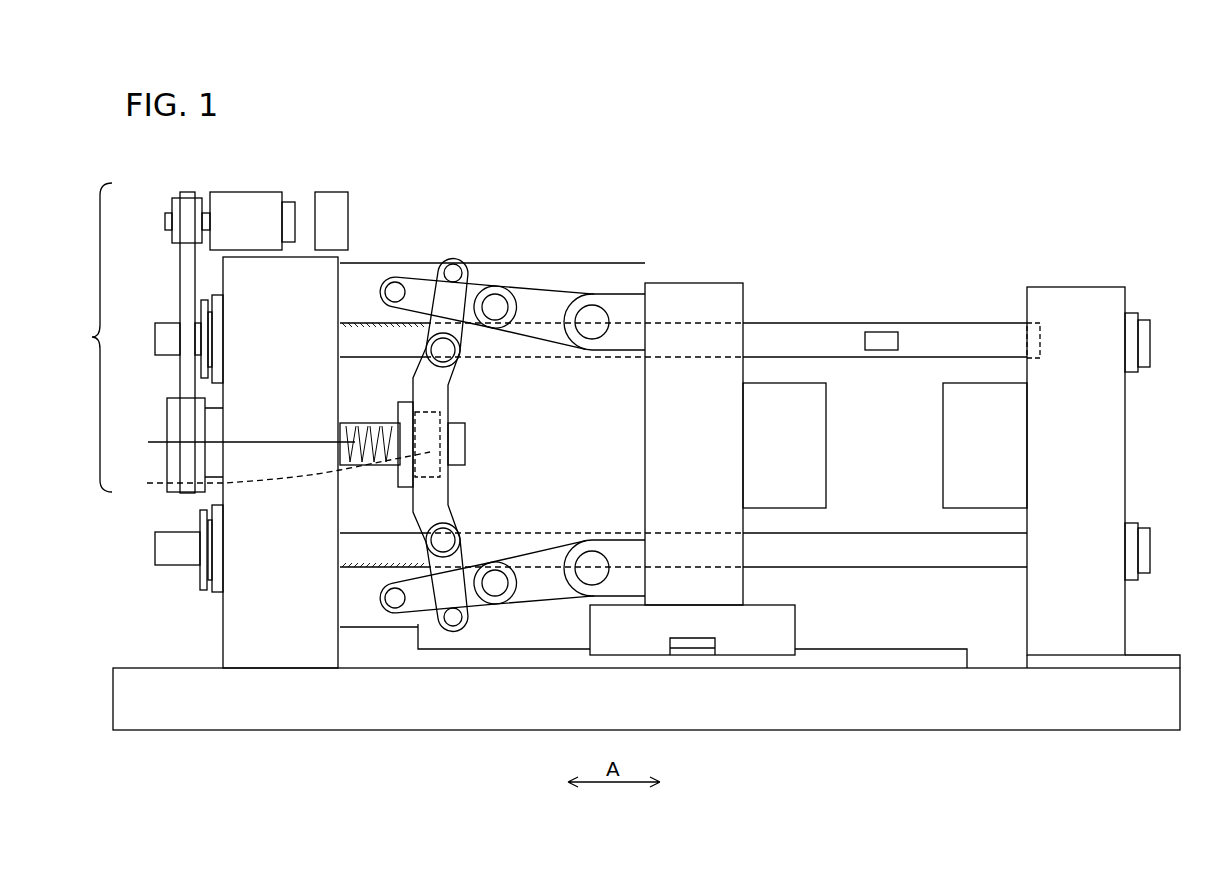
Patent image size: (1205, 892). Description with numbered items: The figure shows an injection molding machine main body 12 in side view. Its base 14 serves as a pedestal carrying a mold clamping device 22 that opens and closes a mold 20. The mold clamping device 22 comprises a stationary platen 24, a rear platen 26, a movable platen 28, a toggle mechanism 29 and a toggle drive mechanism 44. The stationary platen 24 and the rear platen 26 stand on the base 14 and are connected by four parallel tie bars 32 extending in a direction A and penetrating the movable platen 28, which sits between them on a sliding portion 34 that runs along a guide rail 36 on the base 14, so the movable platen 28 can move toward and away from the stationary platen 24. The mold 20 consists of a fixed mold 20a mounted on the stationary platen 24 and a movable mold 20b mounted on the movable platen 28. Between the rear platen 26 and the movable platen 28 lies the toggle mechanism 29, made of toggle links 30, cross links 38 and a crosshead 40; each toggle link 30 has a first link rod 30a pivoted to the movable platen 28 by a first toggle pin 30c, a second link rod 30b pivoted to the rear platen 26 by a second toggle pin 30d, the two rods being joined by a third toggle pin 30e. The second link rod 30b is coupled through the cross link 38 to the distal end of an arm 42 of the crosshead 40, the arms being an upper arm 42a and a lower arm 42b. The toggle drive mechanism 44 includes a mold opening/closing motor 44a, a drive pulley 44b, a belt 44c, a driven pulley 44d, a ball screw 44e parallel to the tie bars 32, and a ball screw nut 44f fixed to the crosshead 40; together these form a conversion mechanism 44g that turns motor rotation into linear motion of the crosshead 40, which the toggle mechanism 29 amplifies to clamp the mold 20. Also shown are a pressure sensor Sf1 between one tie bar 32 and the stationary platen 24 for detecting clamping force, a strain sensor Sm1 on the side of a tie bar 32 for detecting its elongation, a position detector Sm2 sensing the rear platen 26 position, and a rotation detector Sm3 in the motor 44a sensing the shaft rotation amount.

The injection molding machine main body 12 is at (434, 139).
The base 14 is at (1124, 746).
The mold 20 is at (885, 441).
The fixed mold 20a is at (943, 445).
The movable mold 20b is at (826, 450).
The mold clamping device 22 is at (699, 400).
The stationary platen 24 is at (1108, 414).
The rear platen 26 is at (240, 634).
The movable platen 28 is at (705, 283).
The toggle mechanism 29 is at (492, 445).
The toggle link 30 is at (502, 459).
The first link rod 30a is at (548, 300).
The second link rod 30b is at (425, 285).
The first toggle pin 30c is at (592, 320).
The second toggle pin 30d is at (392, 288).
The third toggle pin 30e is at (495, 305).
The tie bar 32 is at (932, 333).
The sliding portion 34 is at (785, 627).
The guide rail 36 is at (908, 655).
The cross link 38 is at (453, 272).
The crosshead 40 is at (483, 467).
The arm 42 is at (433, 445).
The upper arm 42a is at (448, 378).
The lower arm 42b is at (452, 512).
The toggle drive mechanism 44 is at (243, 319).
The mold opening/closing motor 44a is at (248, 195).
The drive pulley 44b is at (173, 210).
The belt 44c is at (185, 280).
The driven pulley 44d is at (172, 410).
The ball screw 44e is at (257, 444).
The ball screw nut 44f is at (272, 475).
The conversion mechanism 44g is at (243, 340).
The strain sensor Sm1 is at (876, 332).
The position detector Sm2 is at (335, 192).
The rotation detector Sm3 is at (290, 205).
The pressure sensor Sf1 is at (1040, 341).